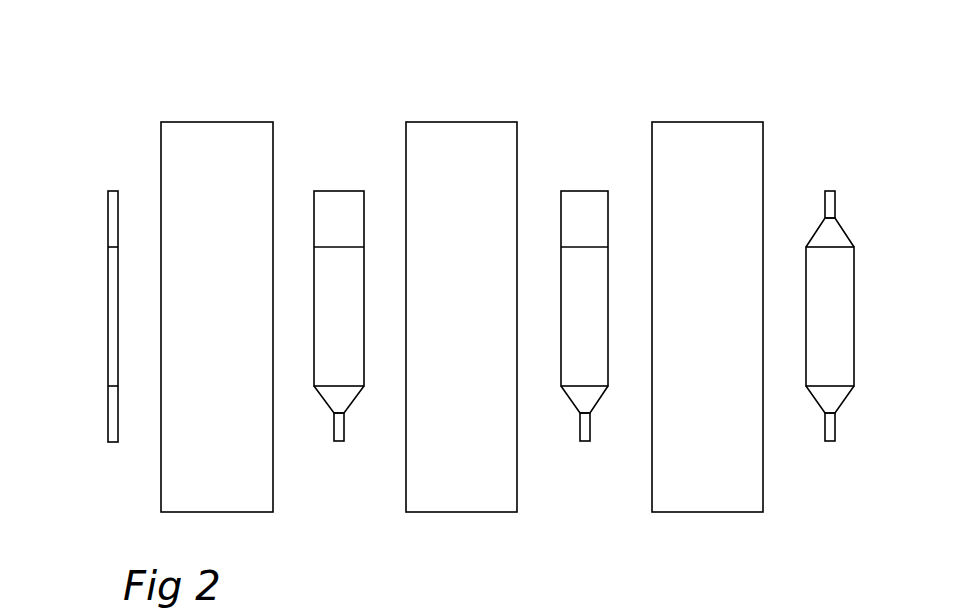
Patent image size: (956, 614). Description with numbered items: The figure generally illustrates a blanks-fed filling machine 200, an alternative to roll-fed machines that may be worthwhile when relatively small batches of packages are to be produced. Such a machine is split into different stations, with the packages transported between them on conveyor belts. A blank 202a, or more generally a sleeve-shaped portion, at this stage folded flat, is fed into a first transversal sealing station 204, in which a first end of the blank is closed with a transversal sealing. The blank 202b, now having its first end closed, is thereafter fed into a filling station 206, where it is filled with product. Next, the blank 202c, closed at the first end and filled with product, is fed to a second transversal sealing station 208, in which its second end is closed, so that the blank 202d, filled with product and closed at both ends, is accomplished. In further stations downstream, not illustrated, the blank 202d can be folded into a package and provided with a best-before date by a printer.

The blanks-fed filling machine 200 is at (139, 84).
The blank 202a is at (109, 415).
The blank 202b is at (327, 403).
The blank 202c is at (573, 403).
The blank 202d is at (818, 403).
The first transversal sealing station 204 is at (239, 328).
The filling station 206 is at (484, 328).
The second transversal sealing station 208 is at (730, 328).